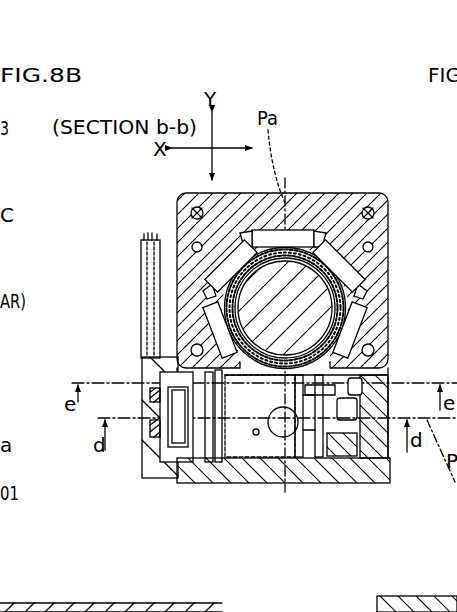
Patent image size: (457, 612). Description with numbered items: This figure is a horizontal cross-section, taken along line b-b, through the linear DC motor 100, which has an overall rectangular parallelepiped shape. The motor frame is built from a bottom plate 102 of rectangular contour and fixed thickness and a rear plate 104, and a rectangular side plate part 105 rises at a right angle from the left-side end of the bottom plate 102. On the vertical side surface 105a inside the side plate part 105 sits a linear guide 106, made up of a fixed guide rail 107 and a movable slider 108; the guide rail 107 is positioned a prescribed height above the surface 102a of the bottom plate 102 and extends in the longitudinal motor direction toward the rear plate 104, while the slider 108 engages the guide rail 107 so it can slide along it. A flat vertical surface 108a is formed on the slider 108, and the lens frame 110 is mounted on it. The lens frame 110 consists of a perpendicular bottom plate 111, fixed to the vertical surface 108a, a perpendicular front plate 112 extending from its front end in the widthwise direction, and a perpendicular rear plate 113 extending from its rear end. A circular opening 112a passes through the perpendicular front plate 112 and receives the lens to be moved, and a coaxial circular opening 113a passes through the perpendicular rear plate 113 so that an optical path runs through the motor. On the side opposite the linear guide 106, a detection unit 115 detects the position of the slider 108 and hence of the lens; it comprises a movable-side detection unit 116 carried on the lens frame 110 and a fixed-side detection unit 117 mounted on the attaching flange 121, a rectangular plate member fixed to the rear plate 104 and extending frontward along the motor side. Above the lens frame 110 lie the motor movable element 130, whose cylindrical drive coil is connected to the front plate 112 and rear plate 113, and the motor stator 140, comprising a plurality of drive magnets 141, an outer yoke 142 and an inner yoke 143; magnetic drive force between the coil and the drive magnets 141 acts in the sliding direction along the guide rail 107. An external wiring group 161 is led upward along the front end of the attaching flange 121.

The linear DC motor 100 is at (50, 131).
The bottom plate 102 is at (198, 484).
The surface of the bottom plate 102a is at (220, 483).
The rear plate 104 is at (198, 604).
The side plate part 105 is at (390, 425).
The vertical side surface 105a is at (350, 392).
The linear guide 106 is at (405, 521).
The guide rail 107 is at (352, 425).
The slider 108 is at (332, 447).
The vertical surface 108a is at (316, 397).
The lens frame 110 is at (277, 480).
The perpendicular bottom plate 111 is at (312, 440).
The perpendicular front plate 112 is at (260, 412).
The circular opening 112a is at (278, 432).
The perpendicular rear plate 113 is at (78, 611).
The circular opening 113a is at (112, 611).
The detection unit 115 is at (160, 520).
The movable-side detection unit 116 is at (190, 448).
The fixed-side detection unit 117 is at (172, 438).
The attaching flange 121 is at (136, 369).
The motor movable element 130 is at (178, 194).
The motor stator 140 is at (420, 116).
The drive magnets 141 is at (232, 262).
The outer yoke 142 is at (307, 236).
The inner yoke 143 is at (346, 276).
The external wiring group 161 is at (165, 312).